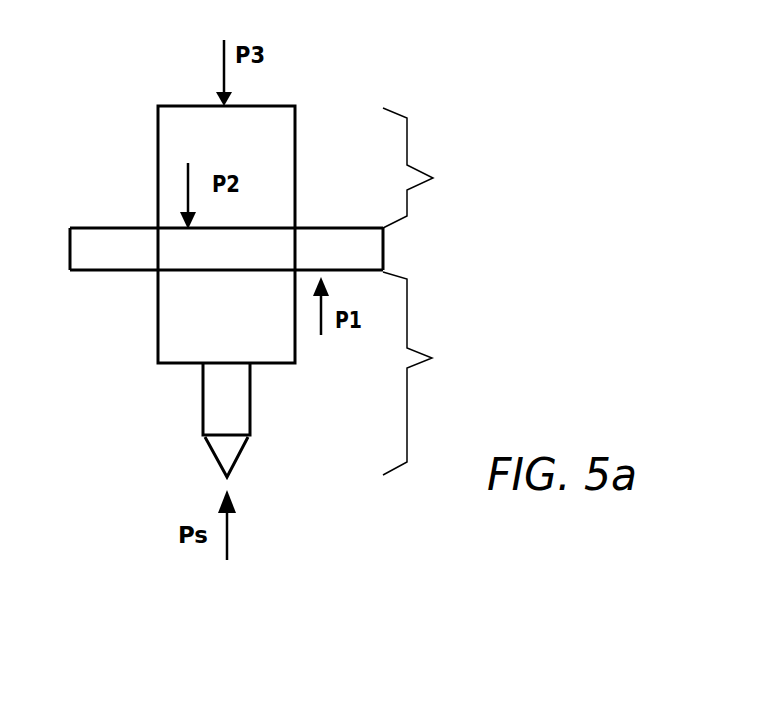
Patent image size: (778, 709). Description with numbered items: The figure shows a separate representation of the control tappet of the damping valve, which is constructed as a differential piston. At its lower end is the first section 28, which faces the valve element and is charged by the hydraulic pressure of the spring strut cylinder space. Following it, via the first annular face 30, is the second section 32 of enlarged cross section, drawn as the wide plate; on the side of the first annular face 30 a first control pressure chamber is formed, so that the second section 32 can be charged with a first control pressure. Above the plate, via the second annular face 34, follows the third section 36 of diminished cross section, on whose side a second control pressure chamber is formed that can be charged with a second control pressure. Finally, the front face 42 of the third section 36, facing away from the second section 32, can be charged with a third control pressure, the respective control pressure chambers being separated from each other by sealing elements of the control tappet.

The front face 42 is at (192, 105).
The second annular face 34 is at (118, 223).
The first annular face 30 is at (108, 275).
The second section 32 is at (410, 248).
The third section 36 is at (462, 177).
The first section 28 is at (338, 374).